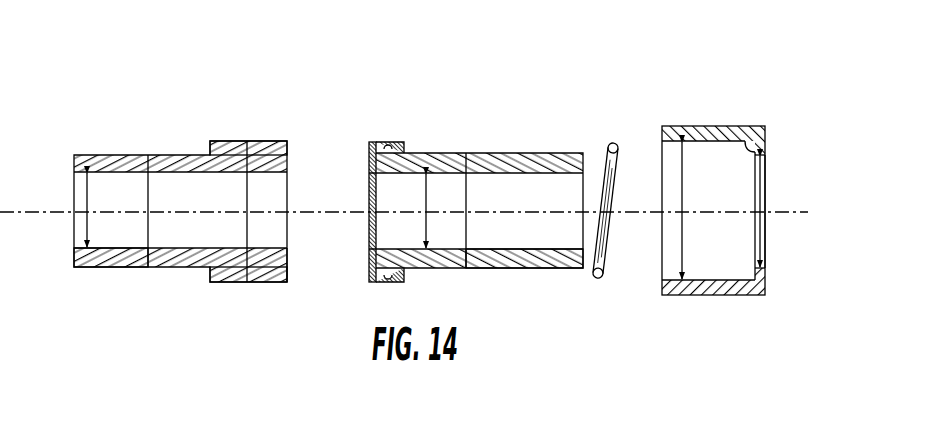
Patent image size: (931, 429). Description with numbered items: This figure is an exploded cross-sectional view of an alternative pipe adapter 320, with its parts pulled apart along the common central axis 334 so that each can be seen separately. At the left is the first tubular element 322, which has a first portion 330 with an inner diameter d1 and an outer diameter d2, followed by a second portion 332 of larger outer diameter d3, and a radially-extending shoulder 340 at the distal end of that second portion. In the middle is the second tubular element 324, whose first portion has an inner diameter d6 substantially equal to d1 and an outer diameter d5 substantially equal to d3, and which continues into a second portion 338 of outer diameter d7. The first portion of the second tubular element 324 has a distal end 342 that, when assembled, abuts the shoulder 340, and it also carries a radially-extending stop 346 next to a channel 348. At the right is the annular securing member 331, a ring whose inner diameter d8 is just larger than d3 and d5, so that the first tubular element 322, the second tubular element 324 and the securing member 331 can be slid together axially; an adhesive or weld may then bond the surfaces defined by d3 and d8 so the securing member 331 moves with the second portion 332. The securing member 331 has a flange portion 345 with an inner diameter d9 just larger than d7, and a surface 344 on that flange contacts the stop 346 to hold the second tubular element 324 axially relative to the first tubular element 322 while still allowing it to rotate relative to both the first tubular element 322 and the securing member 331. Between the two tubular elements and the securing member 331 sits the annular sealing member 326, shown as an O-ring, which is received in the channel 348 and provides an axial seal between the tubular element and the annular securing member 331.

The pipe adapter 320 is at (547, 111).
The first tubular element 322 is at (192, 154).
The second tubular element 324 is at (483, 154).
The annular sealing member 326 is at (614, 141).
The first portion 330 is at (92, 269).
The annular securing member 331 is at (720, 127).
The second portion 332 is at (227, 276).
The central axis 334 is at (780, 212).
The second portion 338 is at (497, 269).
The radially-extending shoulder 340 is at (290, 267).
The distal end 342 is at (369, 163).
The surface 344 is at (757, 150).
The flange portion 345 is at (762, 284).
The radially-extending stop 346 is at (404, 151).
The channel 348 is at (388, 148).
The inner diameter d1 is at (88, 202).
The outer diameter d2 is at (149, 204).
The outer diameter d3 is at (248, 204).
The outer diameter d5 is at (377, 206).
The inner diameter d6 is at (427, 204).
The outer diameter d7 is at (467, 205).
The inner diameter d8 is at (683, 202).
The inner diameter d9 is at (758, 190).